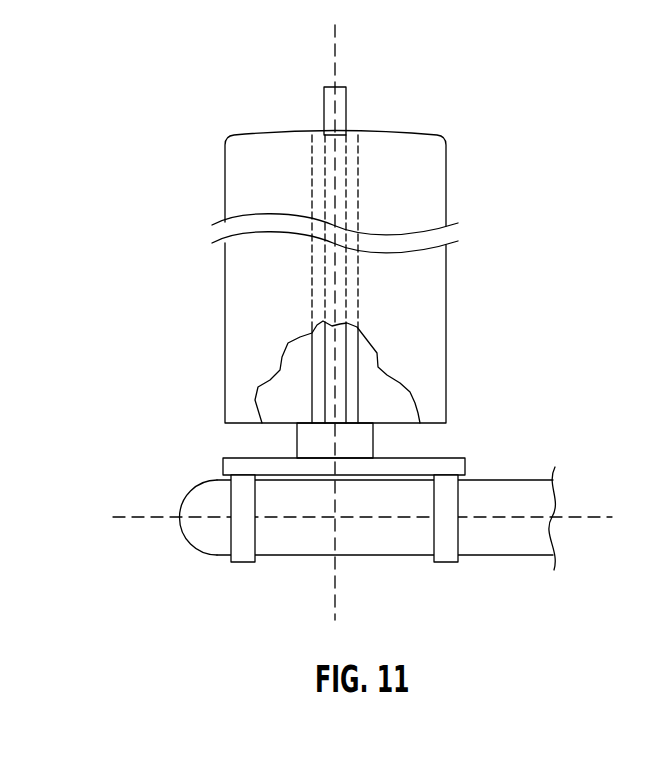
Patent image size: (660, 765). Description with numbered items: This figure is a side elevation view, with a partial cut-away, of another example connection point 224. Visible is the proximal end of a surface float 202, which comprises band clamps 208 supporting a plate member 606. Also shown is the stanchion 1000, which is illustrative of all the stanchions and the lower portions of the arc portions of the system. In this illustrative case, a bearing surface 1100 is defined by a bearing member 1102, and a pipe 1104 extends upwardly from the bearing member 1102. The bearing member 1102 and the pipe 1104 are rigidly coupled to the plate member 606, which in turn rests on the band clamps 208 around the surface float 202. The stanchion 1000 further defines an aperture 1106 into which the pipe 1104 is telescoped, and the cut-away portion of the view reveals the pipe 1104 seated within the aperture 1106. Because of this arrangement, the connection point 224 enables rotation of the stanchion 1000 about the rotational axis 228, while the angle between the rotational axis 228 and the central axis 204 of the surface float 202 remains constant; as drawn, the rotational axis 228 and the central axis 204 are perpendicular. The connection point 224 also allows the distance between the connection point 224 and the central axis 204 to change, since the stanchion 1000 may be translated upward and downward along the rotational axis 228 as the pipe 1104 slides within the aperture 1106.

The rotational axis 228 is at (334, 63).
The pipe 1104 is at (340, 107).
The aperture 1106 is at (337, 177).
The stanchion 1000 is at (435, 301).
The bearing surface 1100 is at (365, 420).
The bearing member 1102 is at (365, 442).
The connection point 224 is at (250, 446).
The plate member 606 is at (447, 458).
The central axis 204 is at (593, 517).
The surface float 202 is at (198, 535).
The band clamps 208 is at (244, 556).